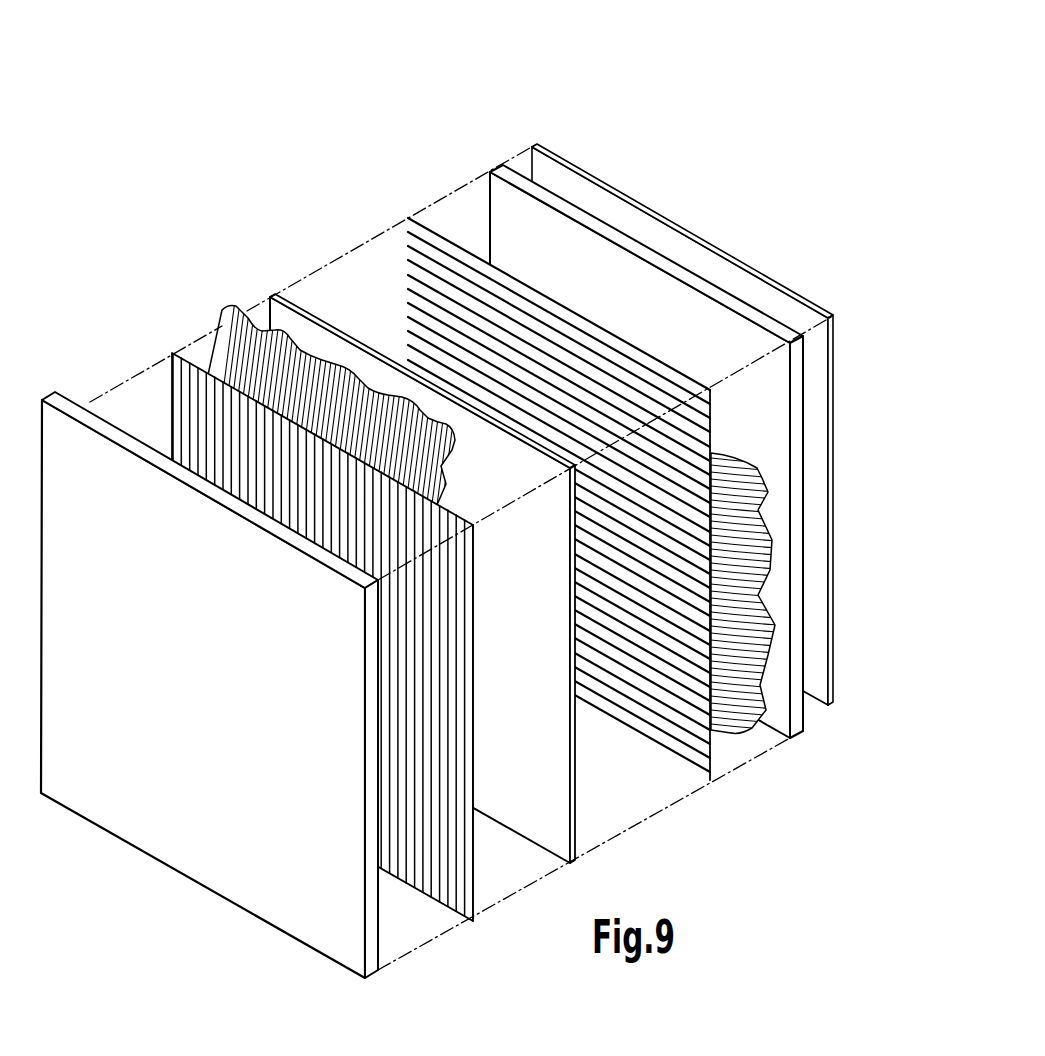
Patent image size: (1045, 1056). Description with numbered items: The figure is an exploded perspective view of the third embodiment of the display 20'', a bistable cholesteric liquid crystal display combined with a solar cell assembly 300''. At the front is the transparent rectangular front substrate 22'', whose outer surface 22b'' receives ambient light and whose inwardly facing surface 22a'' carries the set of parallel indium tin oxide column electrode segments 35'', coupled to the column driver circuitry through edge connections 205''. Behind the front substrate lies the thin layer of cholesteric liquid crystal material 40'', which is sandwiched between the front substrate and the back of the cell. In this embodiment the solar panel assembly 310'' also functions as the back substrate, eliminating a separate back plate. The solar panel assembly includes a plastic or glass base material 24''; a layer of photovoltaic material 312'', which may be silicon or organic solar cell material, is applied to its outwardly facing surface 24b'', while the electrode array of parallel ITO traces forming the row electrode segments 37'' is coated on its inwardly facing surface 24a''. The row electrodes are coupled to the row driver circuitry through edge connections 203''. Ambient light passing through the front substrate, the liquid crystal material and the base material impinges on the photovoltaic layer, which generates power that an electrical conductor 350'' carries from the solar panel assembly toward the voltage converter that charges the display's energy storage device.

The display 20'' is at (473, 555).
The front substrate 22'' is at (237, 712).
The inwardly facing surface 22a'' is at (399, 806).
The outer surface 22b'' is at (203, 689).
The base material 24'' is at (695, 465).
The inwardly facing surface 24a'' is at (660, 455).
The outwardly facing surface 24b'' is at (845, 550).
The column electrode segments 35'' is at (322, 667).
The row electrode segments 37'' is at (612, 526).
The cholesteric liquid crystal material 40'' is at (466, 584).
The edge connections 203'' is at (785, 626).
The edge connections 205'' is at (324, 401).
The solar cell assembly 300'' is at (718, 420).
The solar panel assembly 310'' is at (682, 226).
The photovoltaic material 312'' is at (863, 510).
The electrical conductor 350'' is at (718, 426).